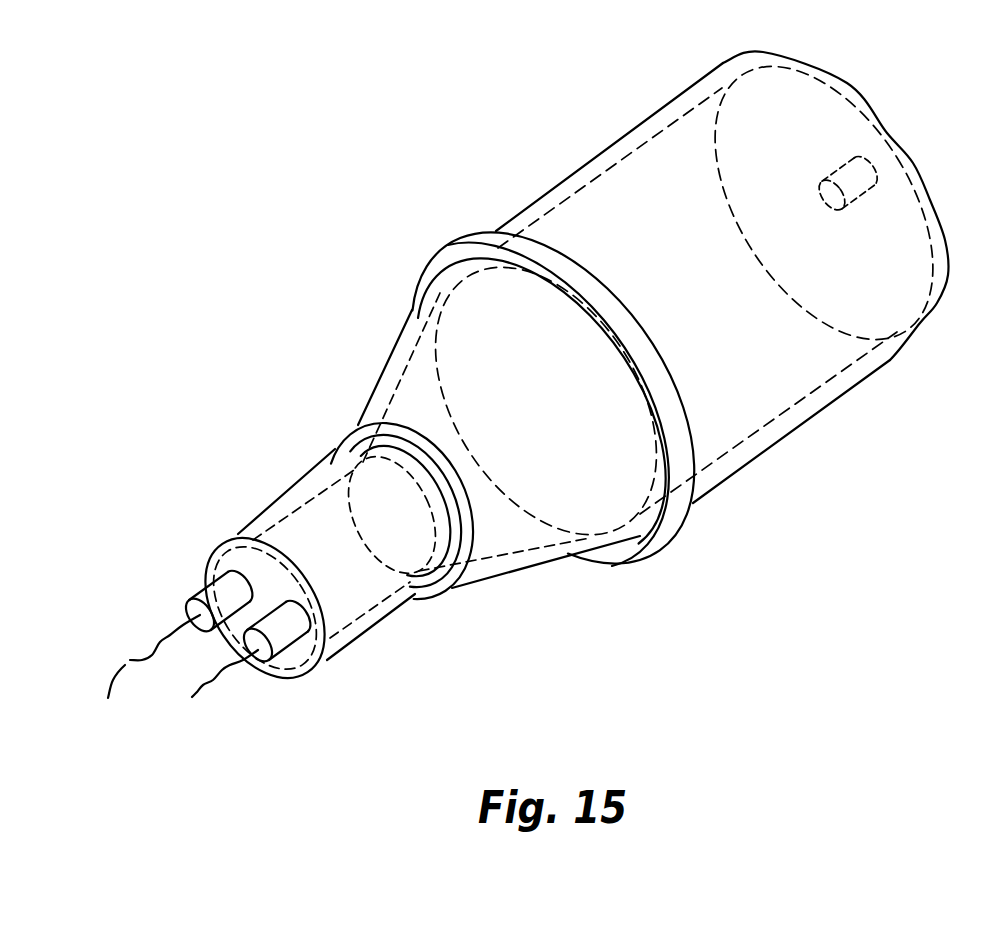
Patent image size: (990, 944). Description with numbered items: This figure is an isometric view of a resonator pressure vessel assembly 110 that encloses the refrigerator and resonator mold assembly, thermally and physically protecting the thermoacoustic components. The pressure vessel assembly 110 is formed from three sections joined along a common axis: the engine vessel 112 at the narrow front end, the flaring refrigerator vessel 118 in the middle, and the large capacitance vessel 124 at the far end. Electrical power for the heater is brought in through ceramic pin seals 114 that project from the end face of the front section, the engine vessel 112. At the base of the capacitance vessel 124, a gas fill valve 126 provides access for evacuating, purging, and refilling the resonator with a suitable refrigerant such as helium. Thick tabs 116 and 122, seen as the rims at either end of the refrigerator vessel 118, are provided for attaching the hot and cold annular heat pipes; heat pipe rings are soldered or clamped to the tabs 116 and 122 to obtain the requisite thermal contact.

The resonator pressure vessel assembly 110 is at (812, 561).
The engine vessel 112 is at (287, 497).
The ceramic pin seals 114 is at (186, 705).
The thick tab 116 is at (433, 593).
The refrigerator vessel 118 is at (397, 367).
The thick tab 122 is at (645, 548).
The capacitance vessel 124 is at (593, 170).
The gas fill valve 126 is at (857, 178).